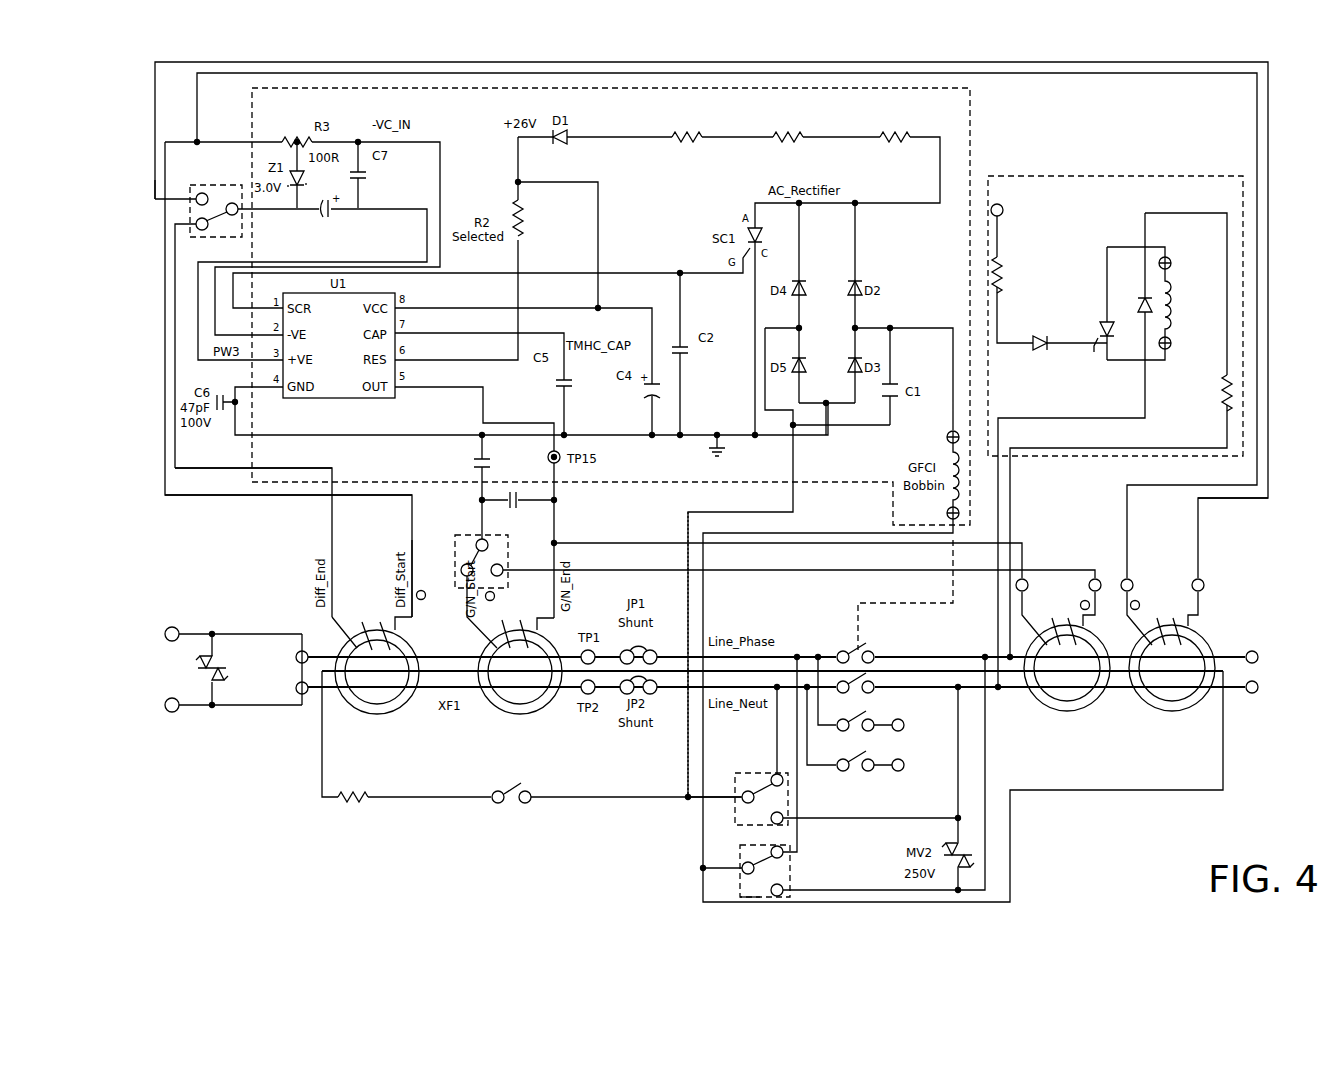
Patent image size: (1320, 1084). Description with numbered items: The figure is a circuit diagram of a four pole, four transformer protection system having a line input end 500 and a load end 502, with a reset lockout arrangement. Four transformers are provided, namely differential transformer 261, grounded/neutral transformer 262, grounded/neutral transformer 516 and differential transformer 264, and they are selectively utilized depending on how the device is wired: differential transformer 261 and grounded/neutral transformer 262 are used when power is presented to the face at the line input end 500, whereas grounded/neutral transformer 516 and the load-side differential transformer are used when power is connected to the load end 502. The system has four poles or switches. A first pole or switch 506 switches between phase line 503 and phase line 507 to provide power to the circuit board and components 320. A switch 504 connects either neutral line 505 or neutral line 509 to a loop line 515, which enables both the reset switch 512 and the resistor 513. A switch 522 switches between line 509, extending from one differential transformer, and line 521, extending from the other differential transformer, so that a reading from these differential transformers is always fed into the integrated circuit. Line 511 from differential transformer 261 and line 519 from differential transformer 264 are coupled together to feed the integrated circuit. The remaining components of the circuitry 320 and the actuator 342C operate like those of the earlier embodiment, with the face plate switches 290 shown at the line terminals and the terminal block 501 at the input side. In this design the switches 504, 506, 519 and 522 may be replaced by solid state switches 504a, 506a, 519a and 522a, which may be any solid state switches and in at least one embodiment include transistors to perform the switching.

The differential transformer 261 is at (345, 706).
The grounded/neutral transformer 262 is at (495, 712).
The differential transformer 264 is at (1142, 704).
The face plate switches 290 is at (856, 652).
The circuit board and components 320 is at (970, 160).
The actuator 342C is at (1187, 172).
The line input end 500 is at (190, 668).
The A-side terminal block 501 is at (225, 704).
The load end 502 is at (1268, 666).
The phase line 503 is at (232, 630).
The switch 504 is at (752, 824).
The solid state switch 504a is at (760, 809).
The neutral line 505 is at (270, 706).
The first pole or switch 506 is at (773, 873).
The solid state switch 506a is at (751, 898).
The phase line 507 is at (1220, 640).
The neutral line 509 is at (332, 528).
The line 511 is at (412, 537).
The reset switch 512 is at (512, 808).
The resistor 513 is at (375, 812).
The loop line 515 is at (620, 800).
The grounded/neutral transformer 516 is at (1040, 705).
The line 519 is at (493, 557).
The solid state switch 519a is at (466, 538).
The line 521 is at (1243, 500).
The switch 522 is at (200, 211).
The solid state switch 522a is at (193, 185).